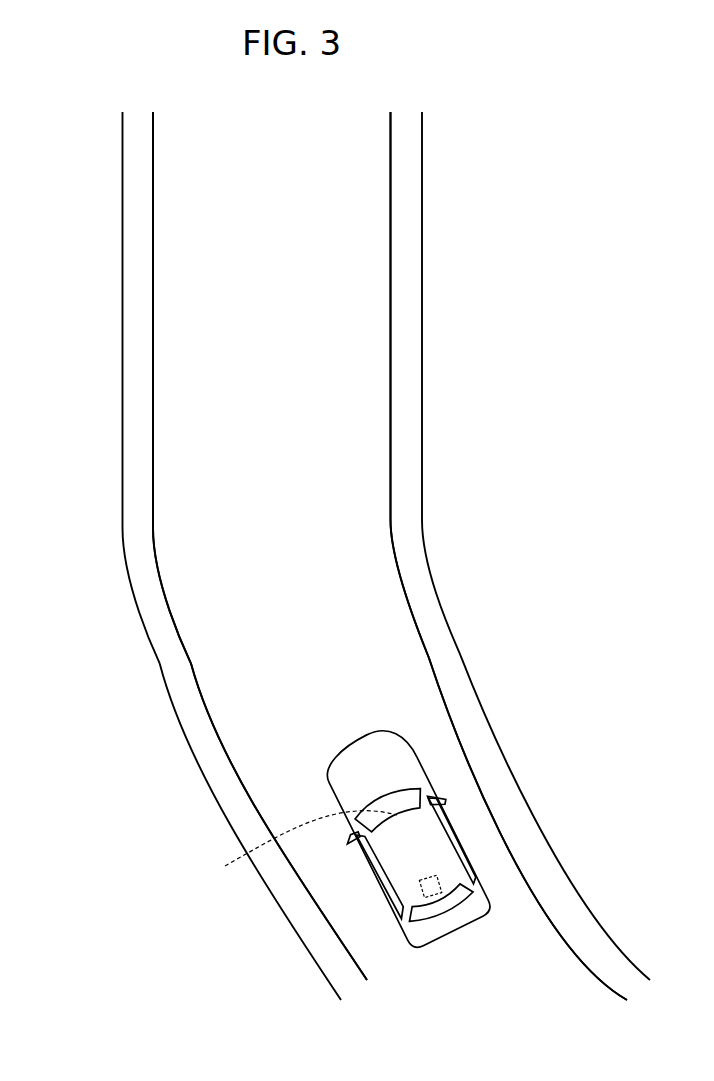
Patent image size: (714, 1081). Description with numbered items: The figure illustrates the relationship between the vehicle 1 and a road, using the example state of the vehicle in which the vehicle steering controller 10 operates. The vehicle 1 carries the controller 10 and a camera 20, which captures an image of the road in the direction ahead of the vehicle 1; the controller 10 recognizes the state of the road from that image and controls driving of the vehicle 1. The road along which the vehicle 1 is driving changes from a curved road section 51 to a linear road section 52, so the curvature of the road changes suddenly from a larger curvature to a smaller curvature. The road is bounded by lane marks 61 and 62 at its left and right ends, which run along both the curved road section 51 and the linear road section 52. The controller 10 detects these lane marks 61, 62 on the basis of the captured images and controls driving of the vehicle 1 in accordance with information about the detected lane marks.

The vehicle 1 is at (462, 930).
The vehicle steering controller 10 is at (422, 893).
The camera 20 is at (298, 847).
The curved road section 51 is at (457, 790).
The linear road section 52 is at (360, 238).
The lane mark 61 is at (137, 477).
The lane mark 62 is at (432, 627).